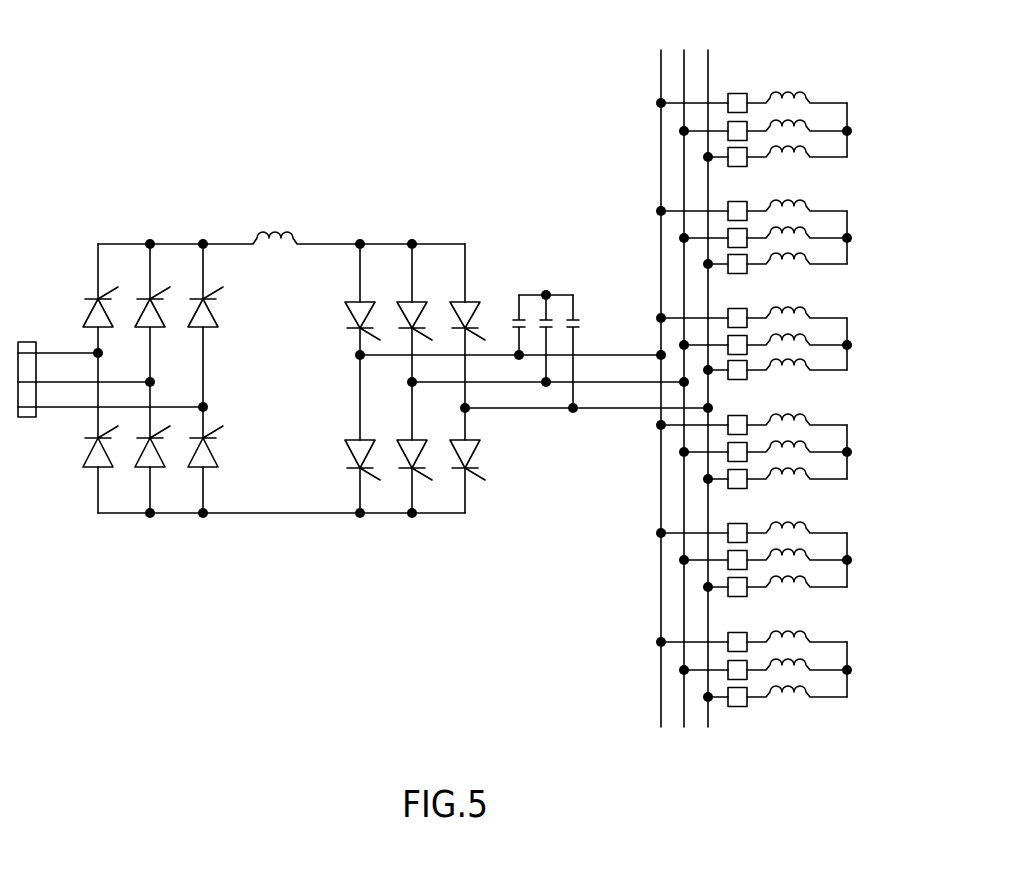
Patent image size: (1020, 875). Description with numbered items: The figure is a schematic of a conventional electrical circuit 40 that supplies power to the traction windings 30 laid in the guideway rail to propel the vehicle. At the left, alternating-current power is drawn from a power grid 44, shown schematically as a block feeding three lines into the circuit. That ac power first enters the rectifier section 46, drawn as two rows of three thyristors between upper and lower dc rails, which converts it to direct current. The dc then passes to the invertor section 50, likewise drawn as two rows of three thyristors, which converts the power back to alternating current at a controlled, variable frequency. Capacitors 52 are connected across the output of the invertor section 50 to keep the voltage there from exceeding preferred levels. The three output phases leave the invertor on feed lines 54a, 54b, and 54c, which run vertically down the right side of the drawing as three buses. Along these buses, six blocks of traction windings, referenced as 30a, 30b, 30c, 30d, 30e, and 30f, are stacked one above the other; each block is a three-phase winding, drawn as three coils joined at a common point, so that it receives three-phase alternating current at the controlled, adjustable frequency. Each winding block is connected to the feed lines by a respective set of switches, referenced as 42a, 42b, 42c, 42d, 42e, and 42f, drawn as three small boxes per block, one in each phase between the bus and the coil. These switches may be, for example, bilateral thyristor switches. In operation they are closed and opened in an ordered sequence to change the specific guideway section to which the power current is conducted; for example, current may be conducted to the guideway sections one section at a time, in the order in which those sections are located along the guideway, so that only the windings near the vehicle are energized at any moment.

The traction windings 30 is at (777, 713).
The traction winding block 30a is at (806, 95).
The traction winding block 30b is at (805, 208).
The traction winding block 30c is at (806, 313).
The traction winding block 30d is at (806, 416).
The traction winding block 30e is at (806, 525).
The traction winding block 30f is at (808, 634).
The electrical circuit 40 is at (232, 186).
The set of switches 42a is at (746, 90).
The set of switches 42b is at (742, 200).
The set of switches 42c is at (742, 307).
The set of switches 42d is at (742, 413).
The set of switches 42e is at (742, 521).
The set of switches 42f is at (742, 630).
The power grid 44 is at (31, 342).
The rectifier section 46 is at (150, 545).
The invertor section 50 is at (404, 543).
The capacitors 52 is at (583, 318).
The feed line 54a is at (659, 78).
The feed line 54b is at (683, 166).
The feed line 54c is at (708, 198).